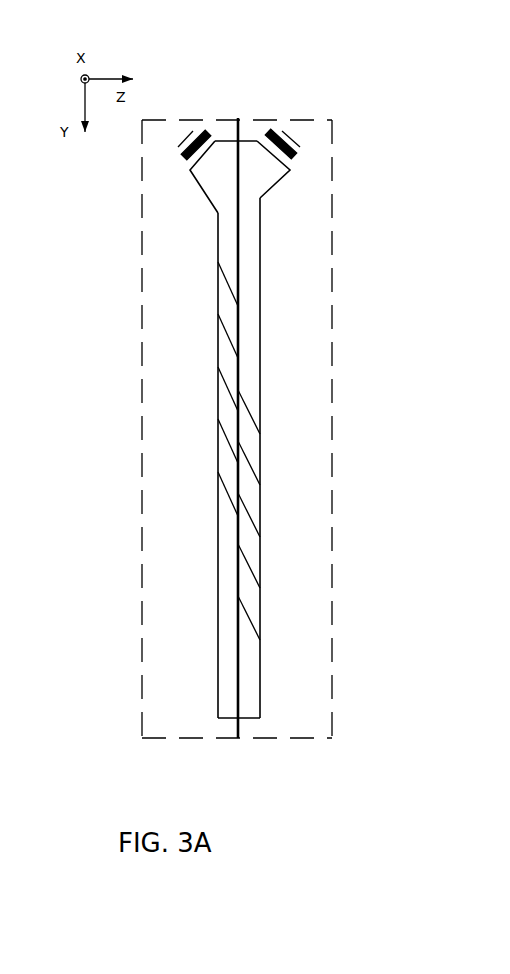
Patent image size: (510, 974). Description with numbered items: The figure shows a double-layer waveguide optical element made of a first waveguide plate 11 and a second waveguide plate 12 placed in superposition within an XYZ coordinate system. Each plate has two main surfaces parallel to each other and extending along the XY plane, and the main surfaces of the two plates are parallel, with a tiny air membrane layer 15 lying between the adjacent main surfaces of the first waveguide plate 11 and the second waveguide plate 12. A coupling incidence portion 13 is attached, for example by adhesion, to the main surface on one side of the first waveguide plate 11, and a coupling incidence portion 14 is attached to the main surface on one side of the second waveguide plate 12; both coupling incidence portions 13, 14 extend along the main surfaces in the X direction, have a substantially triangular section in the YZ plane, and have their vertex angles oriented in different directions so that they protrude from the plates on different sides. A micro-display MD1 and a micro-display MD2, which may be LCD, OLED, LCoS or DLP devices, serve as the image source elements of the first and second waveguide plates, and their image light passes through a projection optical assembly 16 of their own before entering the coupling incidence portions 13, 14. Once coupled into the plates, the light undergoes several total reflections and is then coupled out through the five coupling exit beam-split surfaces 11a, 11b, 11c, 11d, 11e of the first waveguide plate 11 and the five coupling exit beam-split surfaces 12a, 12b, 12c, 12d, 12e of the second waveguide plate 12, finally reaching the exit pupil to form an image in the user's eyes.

The first waveguide plate 11 is at (223, 615).
The coupling exit beam-split surface 11a is at (218, 277).
The coupling exit beam-split surface 11b is at (218, 330).
The coupling exit beam-split surface 11c is at (218, 382).
The coupling exit beam-split surface 11d is at (218, 432).
The coupling exit beam-split surface 11e is at (218, 485).
The second waveguide plate 12 is at (250, 676).
The coupling exit beam-split surface 12a is at (260, 427).
The coupling exit beam-split surface 12b is at (260, 479).
The coupling exit beam-split surface 12c is at (260, 530).
The coupling exit beam-split surface 12d is at (260, 582).
The coupling exit beam-split surface 12e is at (260, 632).
The coupling incidence portion 13 is at (203, 167).
The coupling incidence portion 14 is at (273, 157).
The air membrane layer 15 is at (238, 657).
The projection optical assembly 16 is at (205, 140).
The micro-display MD1 is at (179, 150).
The micro-display MD2 is at (297, 153).